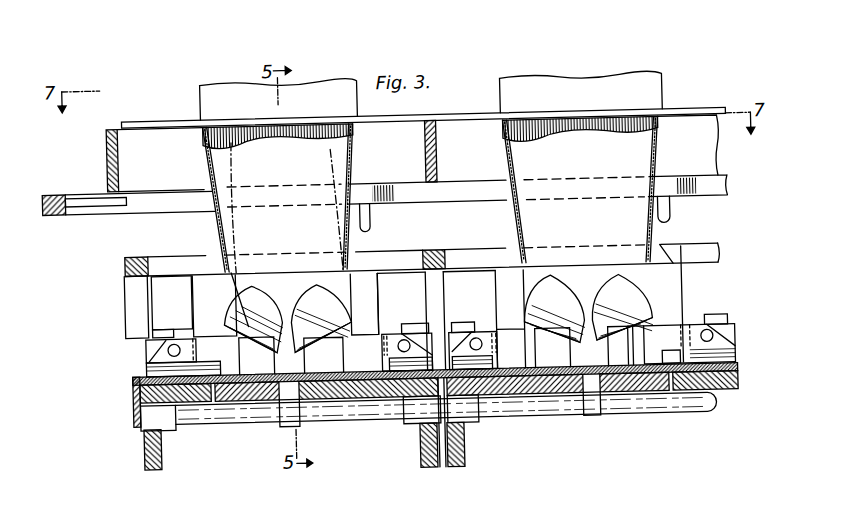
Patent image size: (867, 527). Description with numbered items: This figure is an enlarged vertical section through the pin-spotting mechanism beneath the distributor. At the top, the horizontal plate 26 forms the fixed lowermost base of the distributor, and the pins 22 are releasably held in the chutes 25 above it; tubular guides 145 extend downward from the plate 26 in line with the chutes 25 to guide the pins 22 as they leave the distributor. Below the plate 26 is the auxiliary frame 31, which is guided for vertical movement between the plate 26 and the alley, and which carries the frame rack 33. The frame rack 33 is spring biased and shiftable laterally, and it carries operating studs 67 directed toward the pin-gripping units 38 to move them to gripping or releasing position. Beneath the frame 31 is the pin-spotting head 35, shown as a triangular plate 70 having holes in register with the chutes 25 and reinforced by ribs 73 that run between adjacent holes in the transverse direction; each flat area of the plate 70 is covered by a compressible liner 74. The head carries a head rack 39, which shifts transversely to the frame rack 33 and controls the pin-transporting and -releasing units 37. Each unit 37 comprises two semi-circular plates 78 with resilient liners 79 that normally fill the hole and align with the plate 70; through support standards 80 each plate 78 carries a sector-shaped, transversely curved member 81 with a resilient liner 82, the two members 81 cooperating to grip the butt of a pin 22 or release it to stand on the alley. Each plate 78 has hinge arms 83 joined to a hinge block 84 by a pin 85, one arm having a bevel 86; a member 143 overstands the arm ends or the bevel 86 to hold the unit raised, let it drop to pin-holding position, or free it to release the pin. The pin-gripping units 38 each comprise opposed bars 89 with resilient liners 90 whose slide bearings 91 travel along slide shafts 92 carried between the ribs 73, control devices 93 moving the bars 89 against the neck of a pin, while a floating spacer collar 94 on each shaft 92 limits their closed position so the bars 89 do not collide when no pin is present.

The pins 22 is at (215, 224).
The chutes 25 is at (664, 89).
The horizontal plate 26 is at (486, 114).
The auxiliary frame 31 is at (102, 166).
The frame rack 33 is at (112, 214).
The pin-spotting head 35 is at (124, 389).
The pin-transporting and -releasing units 37 is at (663, 303).
The pin-gripping units 38 is at (465, 462).
The head rack 39 is at (718, 252).
The operating studs 67 is at (372, 222).
The plate 70 is at (727, 370).
The ribs 73 is at (139, 411).
The liner 74 is at (149, 370).
The semi-circular plates 78 is at (333, 370).
The resilient liners 79 is at (352, 409).
The support standards 80 is at (632, 355).
The sector-shaped member 81 is at (344, 325).
The resilient liner 82 is at (330, 312).
The hinge arms 83 is at (687, 331).
The hinge block 84 is at (186, 404).
The pin 85 is at (204, 92).
The bevel 86 is at (450, 337).
The bars 89 is at (437, 467).
The resilient liners 90 is at (418, 450).
The slide bearings 91 is at (173, 420).
The slide shafts 92 is at (234, 411).
The control devices 93 is at (196, 290).
The floating spacer collar 94 is at (293, 421).
The member 143 is at (167, 332).
The tubular guides 145 is at (208, 162).